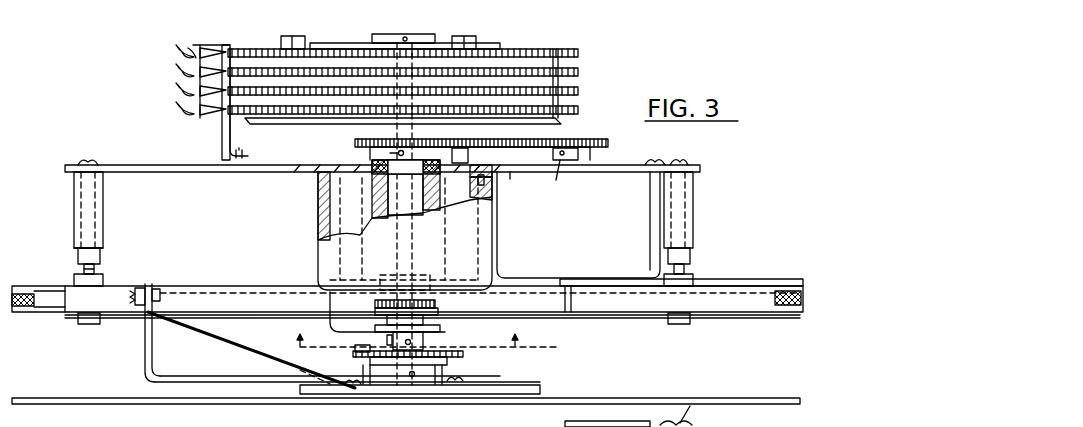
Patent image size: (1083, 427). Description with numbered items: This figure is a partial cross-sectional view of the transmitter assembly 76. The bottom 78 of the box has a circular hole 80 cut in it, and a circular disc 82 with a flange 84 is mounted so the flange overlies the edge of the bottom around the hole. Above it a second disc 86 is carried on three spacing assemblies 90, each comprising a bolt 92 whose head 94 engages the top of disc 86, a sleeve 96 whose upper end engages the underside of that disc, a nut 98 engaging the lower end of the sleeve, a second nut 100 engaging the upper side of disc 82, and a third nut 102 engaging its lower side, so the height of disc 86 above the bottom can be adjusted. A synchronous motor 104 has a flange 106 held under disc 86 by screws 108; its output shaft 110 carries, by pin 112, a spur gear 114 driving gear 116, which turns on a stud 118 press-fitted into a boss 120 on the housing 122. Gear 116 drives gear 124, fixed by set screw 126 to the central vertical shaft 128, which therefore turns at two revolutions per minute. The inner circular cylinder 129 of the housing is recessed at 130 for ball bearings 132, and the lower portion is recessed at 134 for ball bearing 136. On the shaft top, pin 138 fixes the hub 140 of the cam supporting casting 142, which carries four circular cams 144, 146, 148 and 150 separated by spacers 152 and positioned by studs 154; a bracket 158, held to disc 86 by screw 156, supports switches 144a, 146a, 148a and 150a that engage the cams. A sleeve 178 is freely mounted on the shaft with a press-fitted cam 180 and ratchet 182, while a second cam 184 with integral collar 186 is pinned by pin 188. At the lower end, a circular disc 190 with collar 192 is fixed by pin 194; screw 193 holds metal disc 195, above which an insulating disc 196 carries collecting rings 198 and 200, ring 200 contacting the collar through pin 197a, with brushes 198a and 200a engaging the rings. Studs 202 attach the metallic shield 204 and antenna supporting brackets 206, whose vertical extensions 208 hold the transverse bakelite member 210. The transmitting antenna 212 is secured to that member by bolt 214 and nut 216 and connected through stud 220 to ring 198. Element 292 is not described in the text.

The transmitter assembly 76 is at (166, 79).
The bottom of box 78 is at (22, 314).
The circular hole 80 is at (760, 305).
The circular disc 82 is at (208, 296).
The flange 84 is at (712, 282).
The second disc 86 is at (127, 171).
The spacing assemblies 90 is at (104, 190).
The bolt 92 is at (96, 268).
The head 94 is at (92, 162).
The sleeve 96 is at (103, 218).
The nut 98 is at (100, 254).
The second nut 100 is at (78, 278).
The third nut 102 is at (96, 324).
The synchronous motor 104 is at (540, 227).
The flange 106 is at (518, 174).
The screws 108 is at (655, 162).
The output shaft 110 is at (568, 179).
The pin 112 is at (565, 154).
The spur gear 114 is at (609, 143).
The gear 116 is at (492, 142).
The stud 118 is at (478, 179).
The boss 120 is at (475, 193).
The housing 122 is at (493, 250).
The gear 124 is at (358, 139).
The set screw 126 is at (381, 154).
The central vertical shaft 128 is at (410, 215).
The inner circular cylinder 129 is at (330, 223).
The recess 130 is at (380, 183).
The ball bearings 132 is at (450, 154).
The recess 134 is at (430, 279).
The ball bearing 136 is at (430, 312).
The pin 138 is at (418, 38).
The hub 140 is at (398, 34).
The cam supporting casting 142 is at (282, 120).
The circular cam 144 is at (579, 53).
The circular cam 146 is at (579, 72).
The circular cam 148 is at (579, 91).
The circular cam 150 is at (579, 110).
The switch 144a is at (203, 53).
The switch 146a is at (204, 73).
The switch 148a is at (204, 92).
The switch 150a is at (204, 112).
The spacer 152 is at (527, 104).
The studs 154 is at (300, 38).
The screw 156 is at (249, 103).
The bracket 158 is at (222, 137).
The sleeve 178 is at (473, 337).
The cam 180 is at (375, 314).
The ratchet 182 is at (375, 303).
The second cam 184 is at (375, 329).
The collar 186 is at (423, 322).
The pin 188 is at (423, 343).
The circular disc 190 is at (512, 392).
The collar 192 is at (435, 370).
The screw 193 is at (712, 419).
The pin 194 is at (412, 379).
The metal disc 195 is at (395, 362).
The insulating disc 196 is at (375, 360).
The pin 197a is at (755, 419).
The collecting ring 198 is at (463, 355).
The collector brush 198a is at (356, 347).
The collector ring 200 is at (455, 365).
The brush 200a is at (358, 357).
The studs 202 is at (340, 384).
The metallic shield 204 is at (592, 396).
The antenna supporting brackets 206 is at (196, 382).
The vertical extension 208 is at (152, 355).
The transverse bakelite member 210 is at (145, 286).
The transmitting antenna 212 is at (228, 341).
The bolt 214 is at (127, 323).
The nut 216 is at (153, 289).
The stud 220 is at (350, 370).
The carriage housing 292 is at (330, 300).